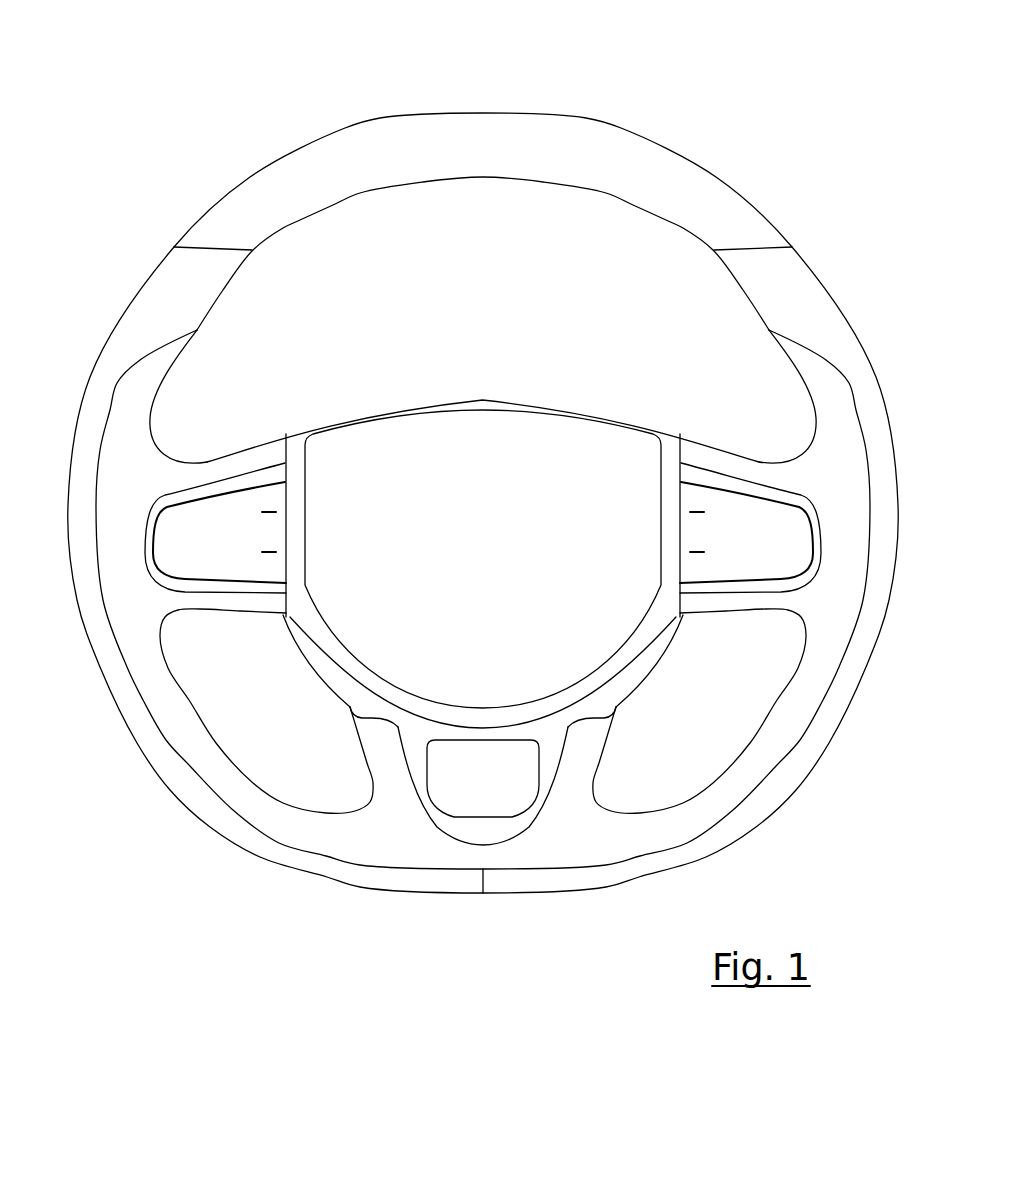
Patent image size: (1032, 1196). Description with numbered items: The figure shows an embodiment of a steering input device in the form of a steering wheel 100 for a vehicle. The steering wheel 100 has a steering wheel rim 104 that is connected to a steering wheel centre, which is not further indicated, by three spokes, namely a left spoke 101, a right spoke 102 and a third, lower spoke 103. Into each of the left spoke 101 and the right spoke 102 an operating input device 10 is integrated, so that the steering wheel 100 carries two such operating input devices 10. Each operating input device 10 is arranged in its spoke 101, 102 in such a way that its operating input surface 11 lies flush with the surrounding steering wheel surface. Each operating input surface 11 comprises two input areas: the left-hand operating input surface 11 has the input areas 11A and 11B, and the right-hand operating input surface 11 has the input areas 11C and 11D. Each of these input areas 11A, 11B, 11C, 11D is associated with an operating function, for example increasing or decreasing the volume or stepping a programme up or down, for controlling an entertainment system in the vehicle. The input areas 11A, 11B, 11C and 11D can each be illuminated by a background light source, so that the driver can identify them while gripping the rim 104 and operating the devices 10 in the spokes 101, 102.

The steering wheel 100 is at (153, 153).
The steering wheel rim 104 is at (673, 135).
The left spoke 101 is at (213, 617).
The right spoke 102 is at (750, 613).
The spoke 103 is at (403, 827).
The operating input device 10 is at (173, 538).
The operating input surface 11 is at (208, 517).
The input area 11A is at (268, 500).
The input area 11B is at (272, 540).
The input area 11C is at (692, 498).
The input area 11D is at (687, 540).